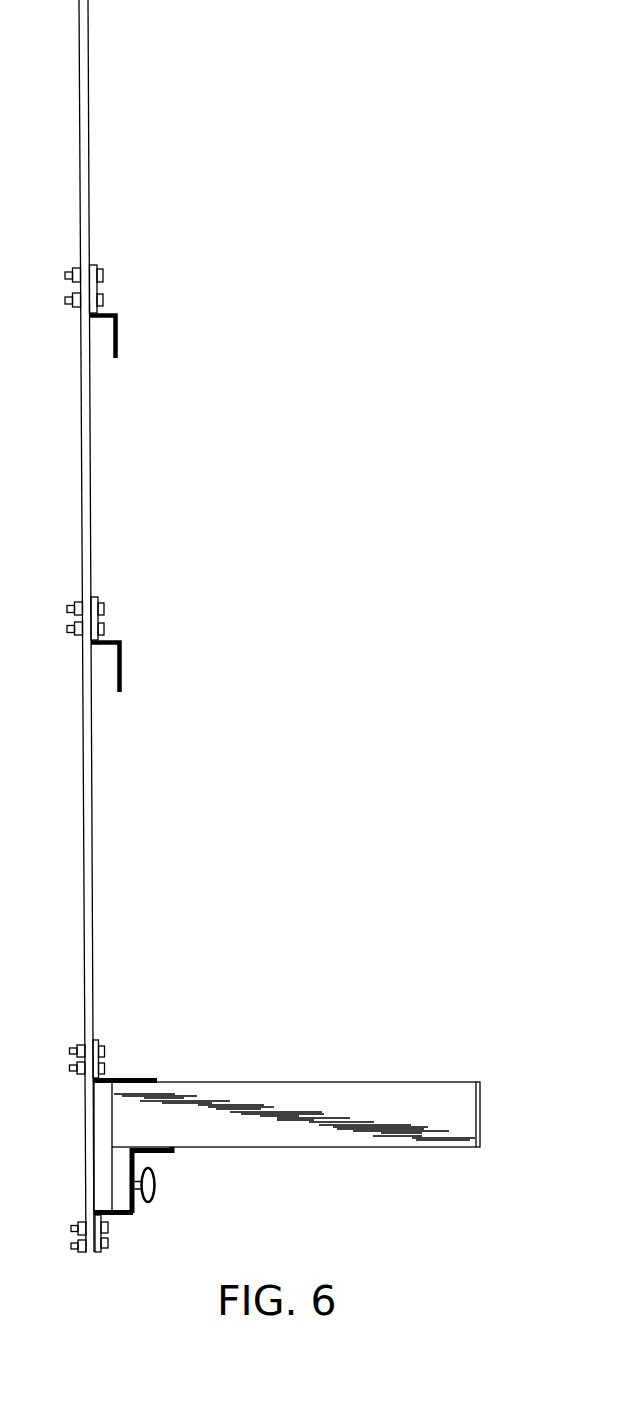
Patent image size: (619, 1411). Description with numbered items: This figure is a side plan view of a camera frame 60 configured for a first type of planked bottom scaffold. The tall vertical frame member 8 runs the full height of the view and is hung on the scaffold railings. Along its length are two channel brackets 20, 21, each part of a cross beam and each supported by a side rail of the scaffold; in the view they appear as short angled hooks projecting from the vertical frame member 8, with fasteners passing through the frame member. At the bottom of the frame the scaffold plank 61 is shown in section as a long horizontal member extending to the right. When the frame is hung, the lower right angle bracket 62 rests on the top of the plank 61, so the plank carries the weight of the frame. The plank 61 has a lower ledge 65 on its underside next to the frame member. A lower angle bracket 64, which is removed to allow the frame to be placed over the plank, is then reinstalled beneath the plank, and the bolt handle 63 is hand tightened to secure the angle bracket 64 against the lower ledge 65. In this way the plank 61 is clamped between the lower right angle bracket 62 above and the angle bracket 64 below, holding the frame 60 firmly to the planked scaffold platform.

The frame 60 is at (151, 199).
The vertical frame member 8 is at (85, 457).
The channel bracket 20 is at (121, 332).
The channel bracket 21 is at (122, 668).
The plank 61 is at (410, 1092).
The lower right angle bracket 62 is at (107, 1077).
The bolt handle 63 is at (156, 1190).
The angle bracket 64 is at (122, 1218).
The lower ledge 65 is at (103, 1182).